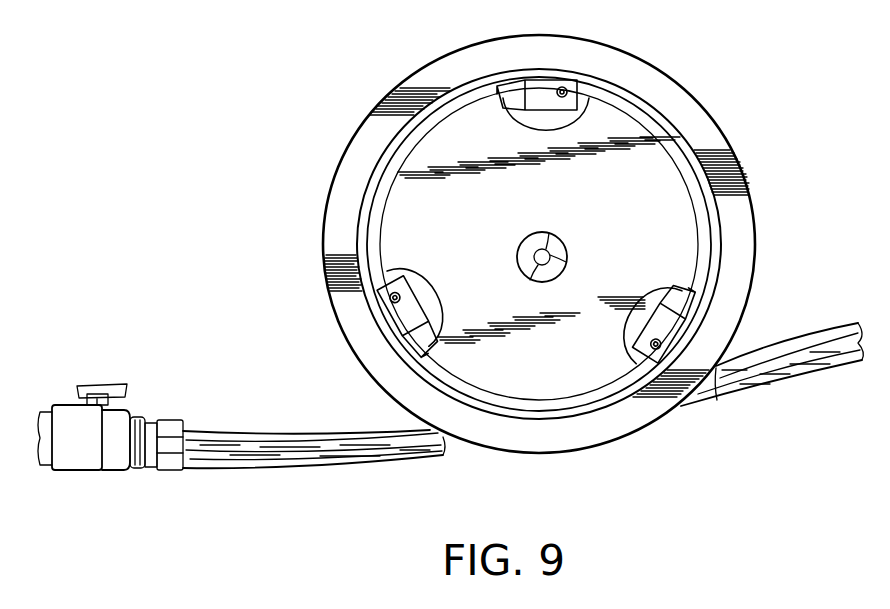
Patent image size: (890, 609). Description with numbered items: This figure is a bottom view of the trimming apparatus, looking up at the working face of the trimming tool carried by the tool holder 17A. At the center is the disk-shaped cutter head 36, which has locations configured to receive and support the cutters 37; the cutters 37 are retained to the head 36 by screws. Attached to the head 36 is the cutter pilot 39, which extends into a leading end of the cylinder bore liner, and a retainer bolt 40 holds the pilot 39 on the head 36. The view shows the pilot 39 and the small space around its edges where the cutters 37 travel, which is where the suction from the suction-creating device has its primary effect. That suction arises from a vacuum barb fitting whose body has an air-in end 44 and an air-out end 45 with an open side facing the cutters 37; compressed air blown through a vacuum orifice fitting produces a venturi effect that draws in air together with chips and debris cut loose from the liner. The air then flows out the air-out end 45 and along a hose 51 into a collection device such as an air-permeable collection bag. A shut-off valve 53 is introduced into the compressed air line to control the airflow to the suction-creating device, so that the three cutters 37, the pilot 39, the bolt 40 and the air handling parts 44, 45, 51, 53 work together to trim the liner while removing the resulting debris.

The tool holder 17A is at (736, 151).
The cutter head 36 is at (707, 213).
The cutters 37 is at (550, 86).
The cutter pilot 39 is at (668, 243).
The retainer bolt 40 is at (533, 246).
The air-in end 44 is at (682, 410).
The air-out end 45 is at (458, 453).
The hose 51 is at (802, 387).
The shut-off valve 53 is at (123, 466).